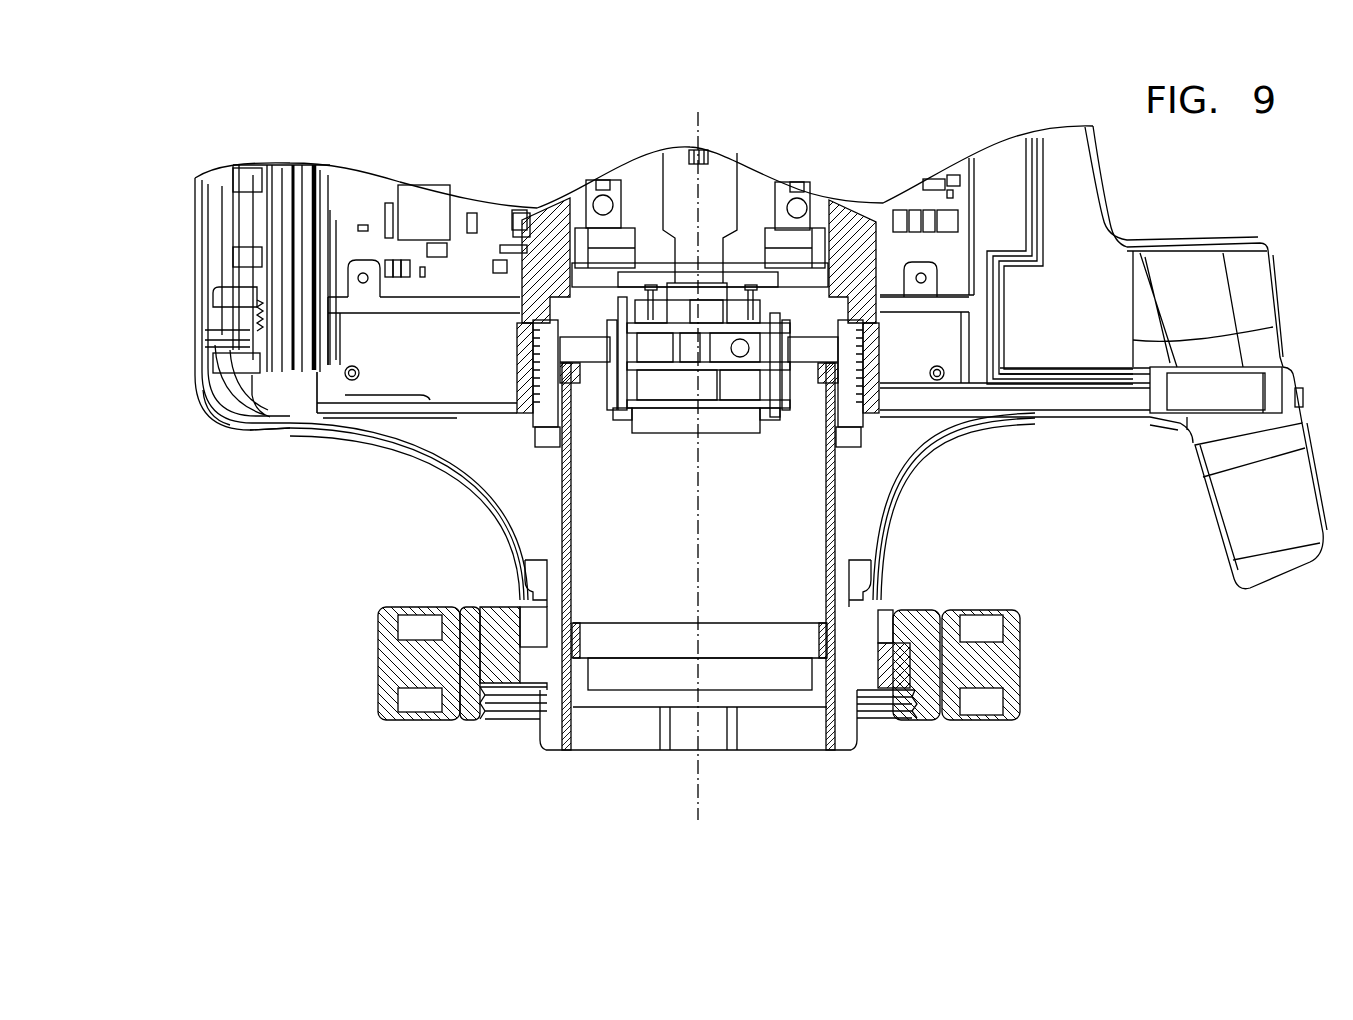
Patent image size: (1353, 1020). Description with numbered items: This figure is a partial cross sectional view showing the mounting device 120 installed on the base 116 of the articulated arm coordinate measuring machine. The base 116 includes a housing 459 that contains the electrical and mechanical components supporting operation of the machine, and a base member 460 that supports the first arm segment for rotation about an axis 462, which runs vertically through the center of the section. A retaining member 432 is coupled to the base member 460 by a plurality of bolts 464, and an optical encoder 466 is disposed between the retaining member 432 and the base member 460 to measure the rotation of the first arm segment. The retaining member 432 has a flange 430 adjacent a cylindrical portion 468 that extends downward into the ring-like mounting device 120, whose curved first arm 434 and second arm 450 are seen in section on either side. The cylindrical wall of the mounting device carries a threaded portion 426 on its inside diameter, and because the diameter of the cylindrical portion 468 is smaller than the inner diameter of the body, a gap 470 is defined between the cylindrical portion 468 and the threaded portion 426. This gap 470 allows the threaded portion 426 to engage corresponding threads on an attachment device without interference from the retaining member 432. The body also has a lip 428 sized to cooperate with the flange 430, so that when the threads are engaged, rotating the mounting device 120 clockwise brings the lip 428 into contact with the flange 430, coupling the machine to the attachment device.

The base 116 is at (182, 274).
The mounting device 120 is at (1024, 697).
The threaded portion 426 is at (900, 725).
The lip 428 is at (505, 597).
The flange 430 is at (860, 690).
The retaining member 432 is at (875, 617).
The first arm 434 is at (1043, 681).
The second arm 450 is at (380, 683).
The housing 459 is at (312, 429).
The base member 460 is at (843, 205).
The axis 462 is at (700, 132).
The bolts 464 is at (490, 445).
The optical encoder 466 is at (672, 433).
The cylindrical portion 468 is at (858, 755).
The gap 470 is at (500, 732).